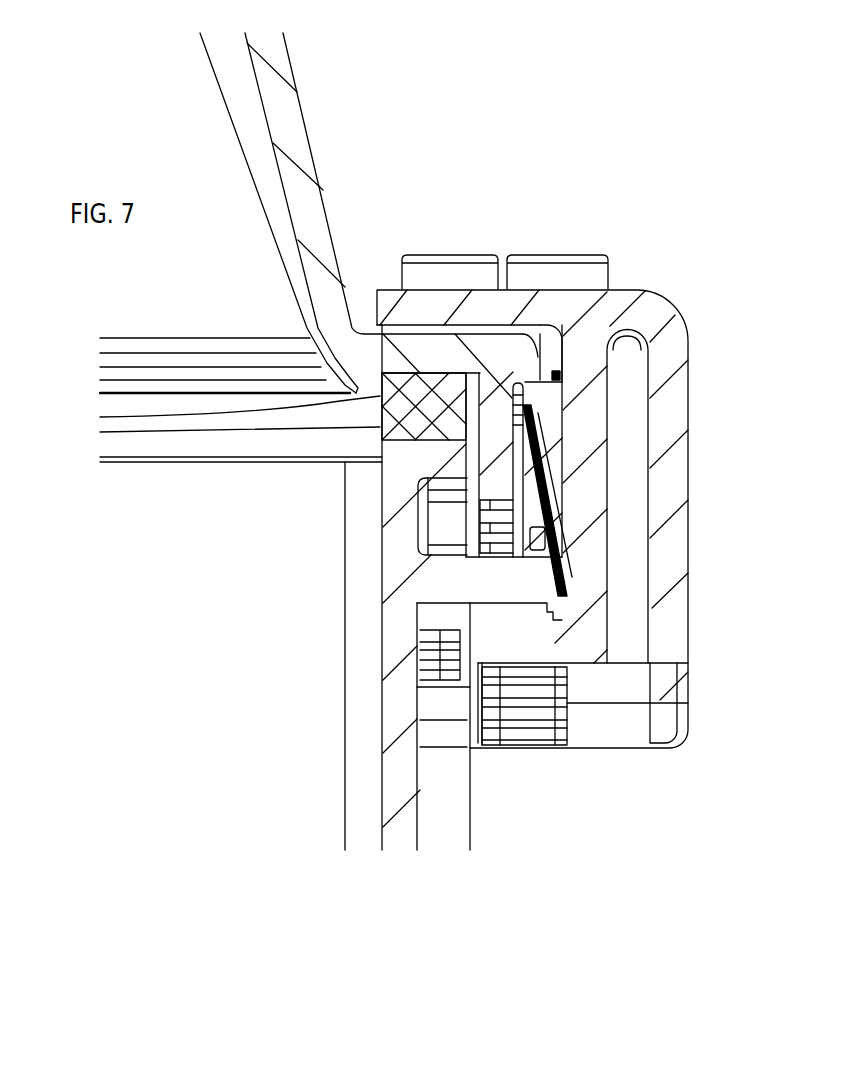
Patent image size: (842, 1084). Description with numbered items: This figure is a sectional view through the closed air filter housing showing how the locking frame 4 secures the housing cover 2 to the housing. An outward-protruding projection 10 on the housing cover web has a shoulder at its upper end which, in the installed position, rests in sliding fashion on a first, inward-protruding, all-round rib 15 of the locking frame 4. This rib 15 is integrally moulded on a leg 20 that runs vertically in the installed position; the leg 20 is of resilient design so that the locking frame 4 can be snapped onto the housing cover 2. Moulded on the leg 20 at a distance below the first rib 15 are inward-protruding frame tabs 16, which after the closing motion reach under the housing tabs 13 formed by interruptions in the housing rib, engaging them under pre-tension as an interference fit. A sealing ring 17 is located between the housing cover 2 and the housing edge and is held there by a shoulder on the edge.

The housing cover 2 is at (331, 190).
The locking frame 4 is at (705, 434).
The projection 10 is at (608, 273).
The housing tab 13 is at (515, 577).
The first rib 15 is at (533, 362).
The frame tab 16 is at (517, 645).
The sealing ring 17 is at (402, 395).
The leg 20 is at (587, 490).